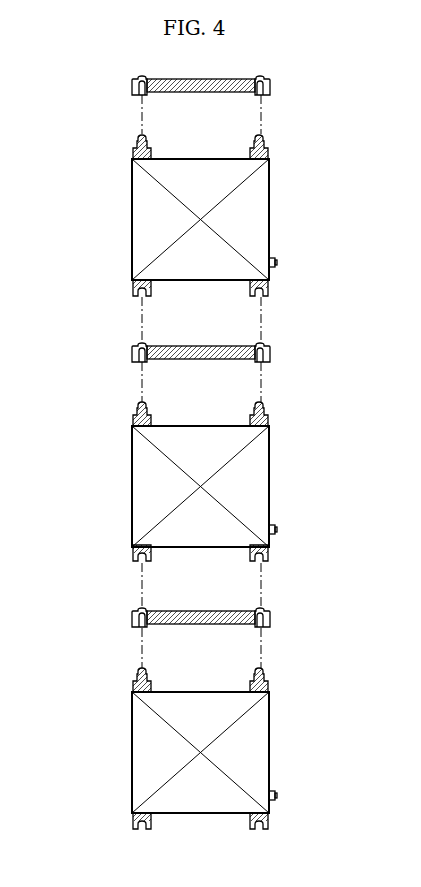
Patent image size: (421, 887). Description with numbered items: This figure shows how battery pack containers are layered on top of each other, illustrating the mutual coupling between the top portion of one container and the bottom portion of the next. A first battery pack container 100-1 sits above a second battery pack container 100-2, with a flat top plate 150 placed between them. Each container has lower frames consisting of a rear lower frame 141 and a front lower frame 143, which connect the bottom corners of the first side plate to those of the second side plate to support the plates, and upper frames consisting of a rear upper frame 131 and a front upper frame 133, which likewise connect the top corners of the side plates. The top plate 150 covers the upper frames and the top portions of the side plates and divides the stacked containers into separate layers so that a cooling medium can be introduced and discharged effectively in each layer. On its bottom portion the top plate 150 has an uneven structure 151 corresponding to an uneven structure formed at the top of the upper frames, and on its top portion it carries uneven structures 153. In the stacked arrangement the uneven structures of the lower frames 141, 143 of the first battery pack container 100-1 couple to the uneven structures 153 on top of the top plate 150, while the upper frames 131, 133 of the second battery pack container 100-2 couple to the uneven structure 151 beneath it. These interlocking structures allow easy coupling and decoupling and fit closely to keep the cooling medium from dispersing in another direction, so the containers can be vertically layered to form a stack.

The first battery pack container 100-1 is at (157, 217).
The second battery pack container 100-2 is at (191, 481).
The rear upper frame 131 is at (110, 414).
The front upper frame 133 is at (298, 414).
The rear lower frame 141 is at (133, 290).
The front lower frame 143 is at (269, 290).
The top plate 150 is at (192, 350).
The uneven structure 151 is at (230, 364).
The uneven structures 153 is at (287, 338).